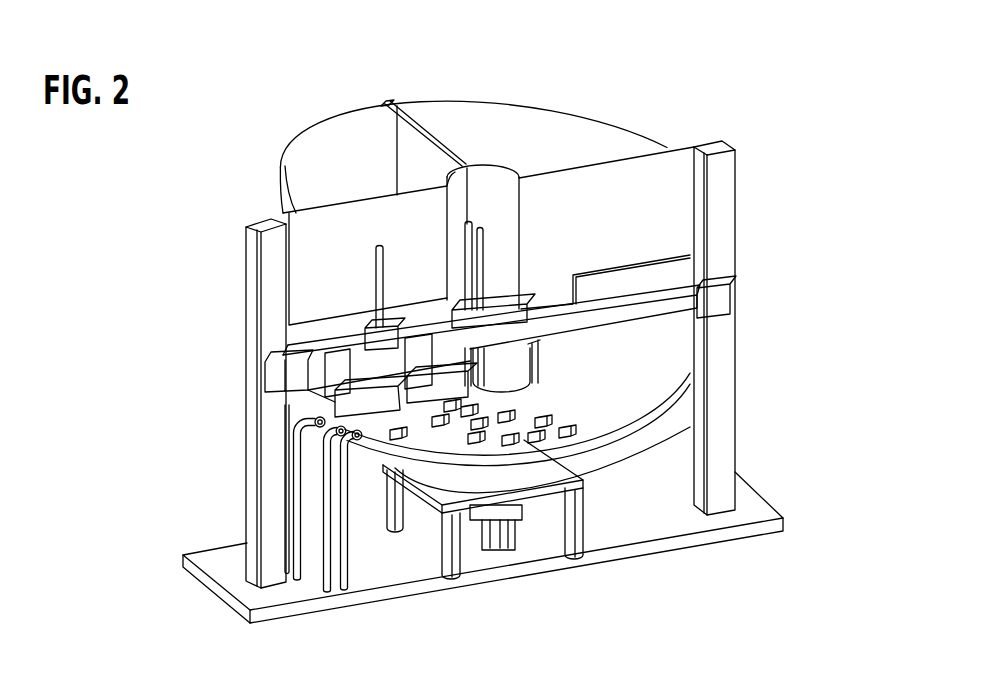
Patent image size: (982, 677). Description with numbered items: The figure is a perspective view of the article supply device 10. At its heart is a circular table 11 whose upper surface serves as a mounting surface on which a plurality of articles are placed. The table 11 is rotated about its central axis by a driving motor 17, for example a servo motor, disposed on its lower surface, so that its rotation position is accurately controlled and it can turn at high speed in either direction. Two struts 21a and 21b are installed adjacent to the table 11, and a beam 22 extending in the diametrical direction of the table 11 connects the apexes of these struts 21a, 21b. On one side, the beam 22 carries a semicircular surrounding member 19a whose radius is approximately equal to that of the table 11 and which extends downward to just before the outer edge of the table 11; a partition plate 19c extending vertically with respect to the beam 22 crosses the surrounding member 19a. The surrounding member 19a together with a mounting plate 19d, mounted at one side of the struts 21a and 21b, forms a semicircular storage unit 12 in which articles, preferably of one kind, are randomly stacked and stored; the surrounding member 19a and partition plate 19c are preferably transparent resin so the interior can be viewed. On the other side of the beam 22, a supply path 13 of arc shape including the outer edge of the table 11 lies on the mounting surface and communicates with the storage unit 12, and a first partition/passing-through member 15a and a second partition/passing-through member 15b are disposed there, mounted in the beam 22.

The article supply device 10 is at (710, 96).
The table 11 is at (660, 447).
The storage unit 12 is at (326, 183).
The supply path 13 is at (637, 388).
The first partition/passing-through member 15a is at (340, 410).
The second partition/passing-through member 15b is at (433, 390).
The driving motor 17 is at (500, 537).
The surrounding member 19a is at (314, 138).
The partition plate 19c is at (425, 132).
The mounting plate 19d is at (583, 212).
The strut 21a is at (721, 178).
The strut 21b is at (272, 253).
The beam 22 is at (657, 312).